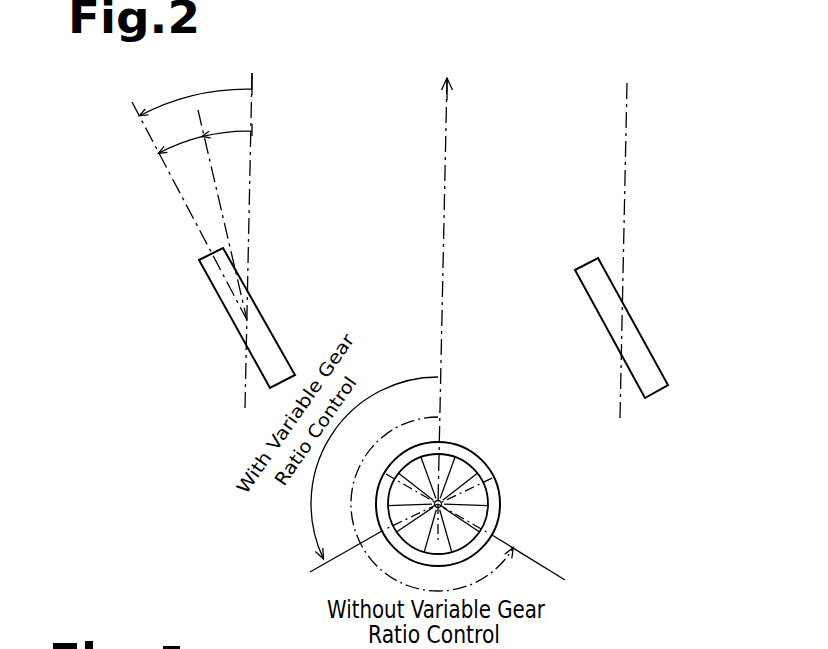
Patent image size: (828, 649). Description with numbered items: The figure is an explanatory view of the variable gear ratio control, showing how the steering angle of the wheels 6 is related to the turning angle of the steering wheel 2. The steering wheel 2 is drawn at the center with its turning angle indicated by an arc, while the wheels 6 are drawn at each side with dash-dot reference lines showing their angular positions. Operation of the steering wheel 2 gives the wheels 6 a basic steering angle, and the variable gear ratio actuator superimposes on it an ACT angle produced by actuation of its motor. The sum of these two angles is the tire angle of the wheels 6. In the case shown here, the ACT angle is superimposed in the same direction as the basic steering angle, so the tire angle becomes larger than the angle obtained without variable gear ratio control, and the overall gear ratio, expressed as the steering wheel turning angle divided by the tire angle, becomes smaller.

The steering wheel 2 is at (495, 470).
The wheels 6 is at (272, 330).